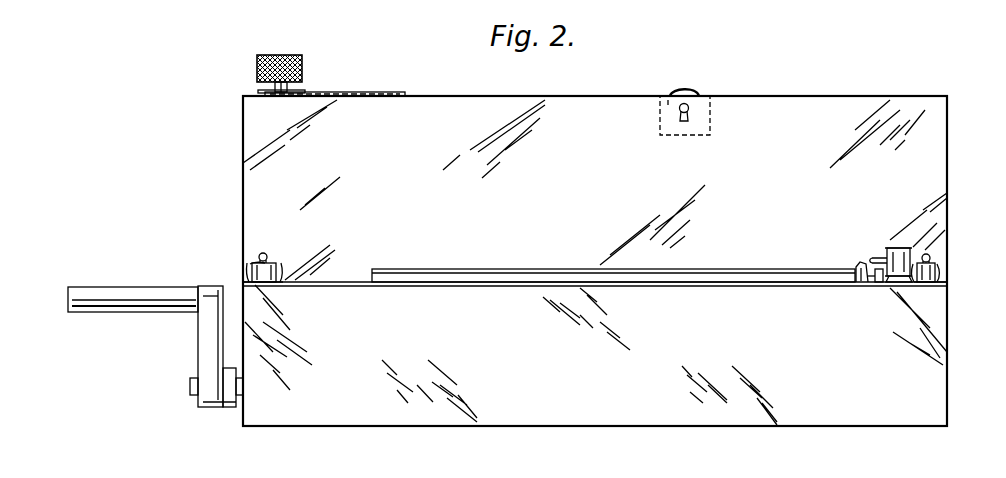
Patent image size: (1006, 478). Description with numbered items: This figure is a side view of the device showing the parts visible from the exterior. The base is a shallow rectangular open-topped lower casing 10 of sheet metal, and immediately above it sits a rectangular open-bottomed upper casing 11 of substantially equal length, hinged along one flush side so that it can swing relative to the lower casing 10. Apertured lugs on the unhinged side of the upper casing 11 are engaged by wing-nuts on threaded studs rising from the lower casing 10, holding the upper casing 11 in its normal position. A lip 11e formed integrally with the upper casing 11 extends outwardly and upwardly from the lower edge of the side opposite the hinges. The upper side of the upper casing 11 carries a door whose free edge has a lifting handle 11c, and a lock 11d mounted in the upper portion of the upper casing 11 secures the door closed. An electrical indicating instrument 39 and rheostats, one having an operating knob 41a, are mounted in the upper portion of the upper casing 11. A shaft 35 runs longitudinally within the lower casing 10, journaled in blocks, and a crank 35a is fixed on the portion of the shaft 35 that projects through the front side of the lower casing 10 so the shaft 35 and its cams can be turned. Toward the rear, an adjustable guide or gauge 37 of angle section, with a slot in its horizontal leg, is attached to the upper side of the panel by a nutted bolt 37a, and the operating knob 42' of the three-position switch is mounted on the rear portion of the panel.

The lower casing 10 is at (352, 400).
The upper casing 11 is at (265, 171).
The lifting handle 11c is at (696, 89).
The lock 11d is at (667, 95).
The lip 11e is at (507, 268).
The shaft 35 is at (190, 384).
The crank 35a is at (145, 346).
The adjustable guide or gauge 37 is at (862, 283).
The nutted bolt 37a is at (880, 283).
The electrical indicating instrument 39 is at (356, 92).
The operating knob 41a is at (280, 55).
The operating knob 42' is at (868, 253).